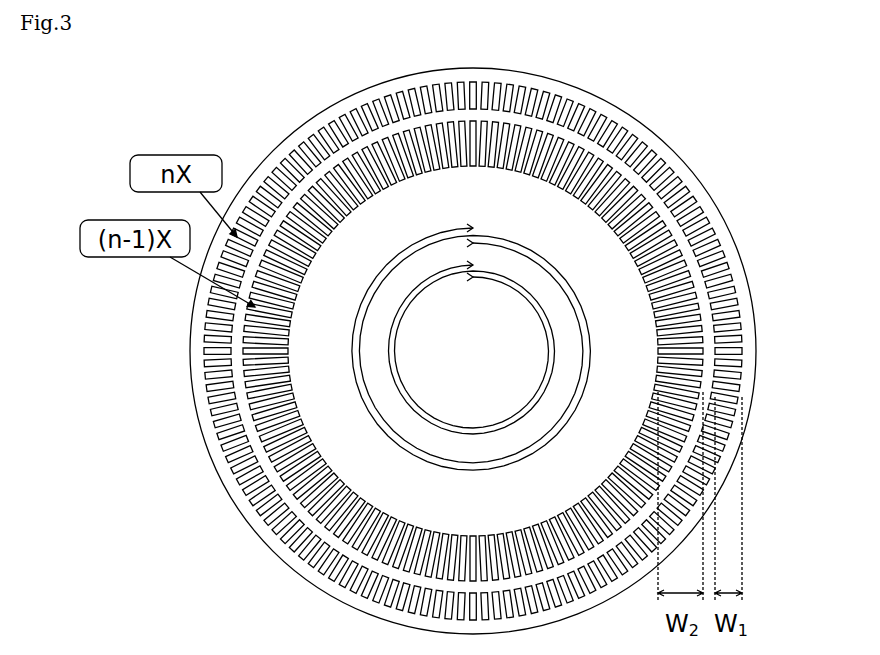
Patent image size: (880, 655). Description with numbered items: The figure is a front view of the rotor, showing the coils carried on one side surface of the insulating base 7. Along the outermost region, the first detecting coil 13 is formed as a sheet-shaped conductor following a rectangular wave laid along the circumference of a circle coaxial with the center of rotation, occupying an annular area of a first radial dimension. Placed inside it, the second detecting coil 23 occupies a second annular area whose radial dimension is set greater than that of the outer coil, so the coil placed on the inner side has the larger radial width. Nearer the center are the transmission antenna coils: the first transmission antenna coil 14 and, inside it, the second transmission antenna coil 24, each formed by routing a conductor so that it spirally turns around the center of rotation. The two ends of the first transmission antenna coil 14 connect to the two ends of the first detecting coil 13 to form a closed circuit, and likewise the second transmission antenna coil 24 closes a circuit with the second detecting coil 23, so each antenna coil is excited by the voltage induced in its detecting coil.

The insulating base 7 is at (707, 193).
The first detecting coil 13 is at (752, 347).
The second detecting coil 23 is at (621, 265).
The first transmission antenna coil 14 is at (599, 313).
The second transmission antenna coil 24 is at (539, 356).